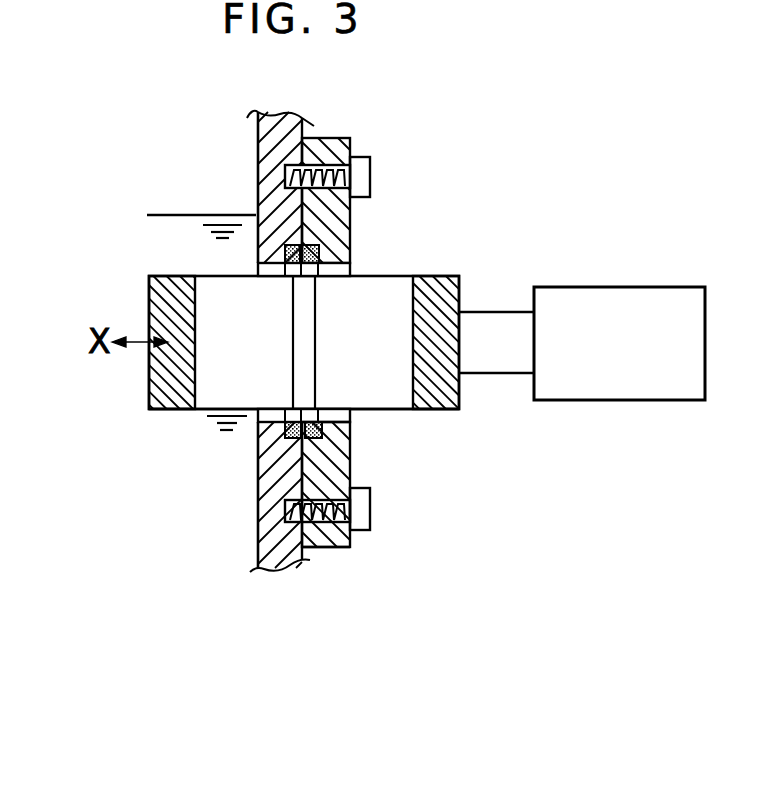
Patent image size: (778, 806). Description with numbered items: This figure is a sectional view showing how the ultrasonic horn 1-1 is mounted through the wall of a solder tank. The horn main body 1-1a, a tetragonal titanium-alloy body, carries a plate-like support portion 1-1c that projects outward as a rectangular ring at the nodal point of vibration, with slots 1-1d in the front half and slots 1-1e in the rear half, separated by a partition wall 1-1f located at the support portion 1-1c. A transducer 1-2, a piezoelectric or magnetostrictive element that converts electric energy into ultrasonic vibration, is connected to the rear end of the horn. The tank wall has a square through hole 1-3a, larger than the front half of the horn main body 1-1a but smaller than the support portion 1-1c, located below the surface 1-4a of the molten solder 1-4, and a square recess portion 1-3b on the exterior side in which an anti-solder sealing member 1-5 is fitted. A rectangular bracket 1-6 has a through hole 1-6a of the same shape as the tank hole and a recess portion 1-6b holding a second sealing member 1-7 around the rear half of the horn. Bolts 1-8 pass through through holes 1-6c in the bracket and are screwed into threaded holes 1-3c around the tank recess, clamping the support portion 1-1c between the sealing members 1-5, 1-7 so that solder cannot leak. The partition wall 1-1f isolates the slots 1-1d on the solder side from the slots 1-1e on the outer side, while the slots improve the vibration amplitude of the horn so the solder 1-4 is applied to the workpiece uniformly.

The ultrasonic horn 1-1 is at (161, 420).
The horn main body 1-1a is at (148, 372).
The support portion 1-1c is at (345, 240).
The slots 1-1d is at (210, 398).
The slots 1-1e is at (380, 395).
The partition wall 1-1f is at (287, 310).
The transducer 1-2 is at (596, 297).
The through hole 1-3a is at (253, 417).
The recess portion 1-3b is at (253, 430).
The threaded holes 1-3c is at (278, 562).
The solder 1-4 is at (203, 226).
The surface of solder 1-4a is at (168, 214).
The sealing member 1-5 is at (257, 196).
The bracket 1-6 is at (352, 537).
The through hole 1-6a is at (350, 267).
The recess portion 1-6b is at (322, 248).
The through holes 1-6c is at (320, 547).
The sealing member 1-7 is at (330, 428).
The bolts 1-8 is at (370, 157).